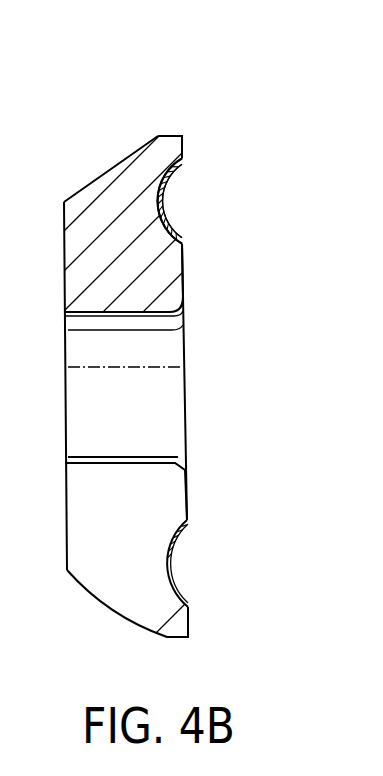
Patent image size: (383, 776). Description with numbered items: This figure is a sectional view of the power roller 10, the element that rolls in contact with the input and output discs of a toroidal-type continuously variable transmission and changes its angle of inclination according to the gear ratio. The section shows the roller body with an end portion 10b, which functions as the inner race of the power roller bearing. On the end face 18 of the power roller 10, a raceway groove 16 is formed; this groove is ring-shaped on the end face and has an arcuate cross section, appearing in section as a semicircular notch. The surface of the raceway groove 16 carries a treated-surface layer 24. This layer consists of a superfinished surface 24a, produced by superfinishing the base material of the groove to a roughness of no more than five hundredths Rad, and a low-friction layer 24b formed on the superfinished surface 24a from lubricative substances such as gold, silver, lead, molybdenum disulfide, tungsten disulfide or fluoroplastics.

The power roller 10 is at (137, 135).
The end portion 10b is at (175, 494).
The raceway groove 16 is at (178, 188).
The end face 18 is at (185, 277).
The treated-surface layer 24 is at (170, 207).
The superfinished surface 24a is at (158, 195).
The low-friction layer 24b is at (183, 235).